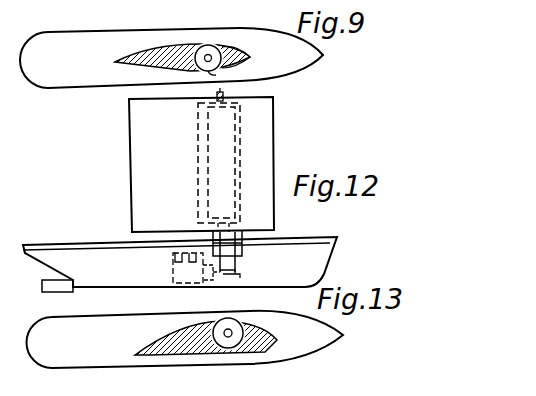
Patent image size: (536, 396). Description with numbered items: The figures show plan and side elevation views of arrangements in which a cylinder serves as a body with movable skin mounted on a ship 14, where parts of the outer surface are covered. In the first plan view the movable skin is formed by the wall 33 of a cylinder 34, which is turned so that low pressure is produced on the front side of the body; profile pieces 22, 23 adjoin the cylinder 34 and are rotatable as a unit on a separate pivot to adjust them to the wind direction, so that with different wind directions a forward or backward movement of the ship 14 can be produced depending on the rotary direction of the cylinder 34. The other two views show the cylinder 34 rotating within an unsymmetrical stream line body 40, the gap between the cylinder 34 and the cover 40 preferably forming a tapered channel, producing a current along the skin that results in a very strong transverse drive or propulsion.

In FIG. 9, the ship 14 is at (171, 58).
In FIG. 13, the ship 14 is at (78, 325).
In FIG. 9, the profile piece 22 is at (142, 56).
In FIG. 9, the profile piece 23 is at (233, 51).
In FIG. 9, the wall of cylinder 33 is at (216, 75).
In FIG. 9, the cylinder 34 is at (203, 50).
In FIG. 12, the cylinder 34 is at (228, 156).
In FIG. 13, the cylinder 34 is at (230, 326).
In FIG. 13, the unsymmetrical stream line body 40 is at (263, 347).